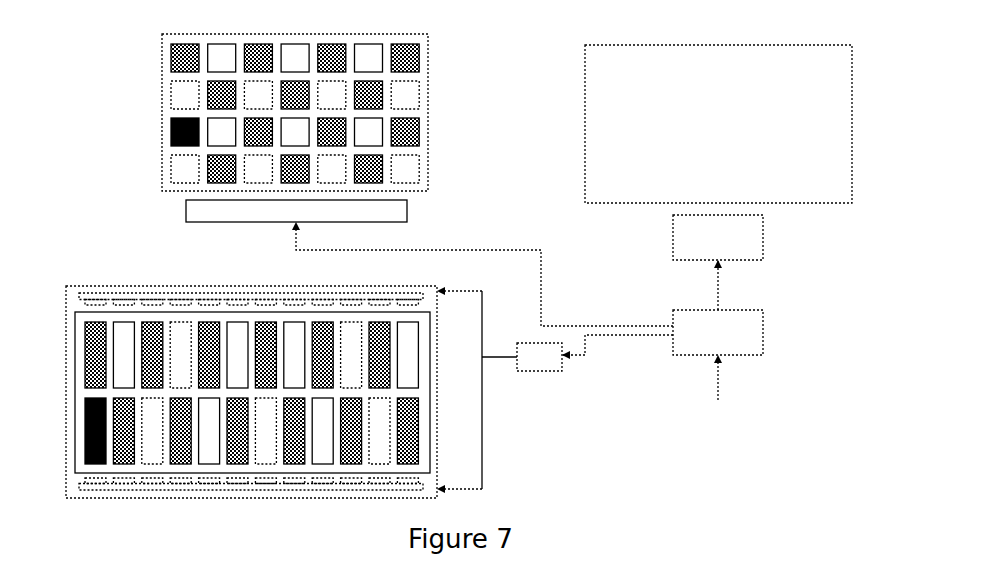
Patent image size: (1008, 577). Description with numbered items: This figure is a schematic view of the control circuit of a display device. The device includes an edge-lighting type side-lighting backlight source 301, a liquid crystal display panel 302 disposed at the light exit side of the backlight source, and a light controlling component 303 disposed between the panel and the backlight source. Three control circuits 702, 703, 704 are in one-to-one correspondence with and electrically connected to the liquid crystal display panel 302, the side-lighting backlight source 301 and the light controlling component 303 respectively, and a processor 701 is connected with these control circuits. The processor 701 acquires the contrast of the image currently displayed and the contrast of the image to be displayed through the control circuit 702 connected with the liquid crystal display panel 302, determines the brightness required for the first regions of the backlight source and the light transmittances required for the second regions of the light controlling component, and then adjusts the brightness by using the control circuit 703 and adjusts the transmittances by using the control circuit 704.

The side-lighting backlight source 301 is at (66, 381).
The liquid crystal display panel 302 is at (852, 119).
The light controlling component 303 is at (162, 116).
The processor 701 is at (763, 333).
The control circuit 702 is at (763, 237).
The control circuit 703 is at (541, 371).
The control circuit 704 is at (186, 213).